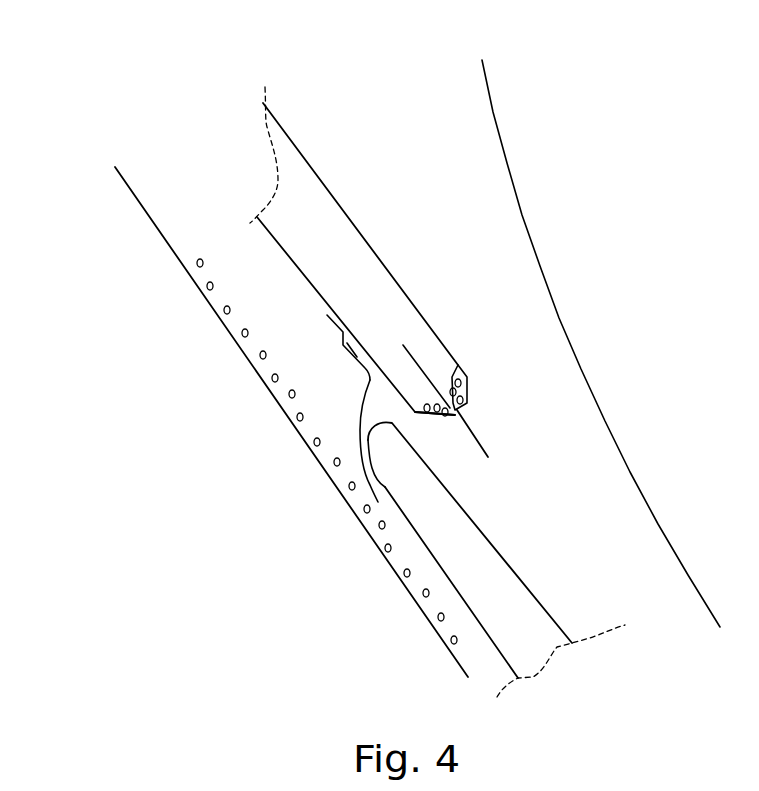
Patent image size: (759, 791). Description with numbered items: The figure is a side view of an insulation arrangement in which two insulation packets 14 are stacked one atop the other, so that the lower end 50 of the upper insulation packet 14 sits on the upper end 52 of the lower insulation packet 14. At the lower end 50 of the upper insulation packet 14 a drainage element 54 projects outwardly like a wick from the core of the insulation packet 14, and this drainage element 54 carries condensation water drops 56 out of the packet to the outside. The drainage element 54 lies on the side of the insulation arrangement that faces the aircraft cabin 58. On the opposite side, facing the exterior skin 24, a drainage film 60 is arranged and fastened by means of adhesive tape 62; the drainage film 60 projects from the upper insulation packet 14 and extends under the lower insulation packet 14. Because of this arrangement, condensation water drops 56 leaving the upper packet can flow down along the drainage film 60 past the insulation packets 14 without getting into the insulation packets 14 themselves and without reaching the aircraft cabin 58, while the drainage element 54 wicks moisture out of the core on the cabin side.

The insulation packet 14 is at (337, 228).
The exterior skin 24 is at (243, 353).
The lower end 50 is at (480, 390).
The upper end 52 is at (444, 430).
The drainage element 54 is at (477, 437).
The condensation water drops 56 is at (458, 364).
The aircraft cabin 58 is at (687, 505).
The drainage film 60 is at (368, 485).
The adhesive tape 62 is at (330, 313).